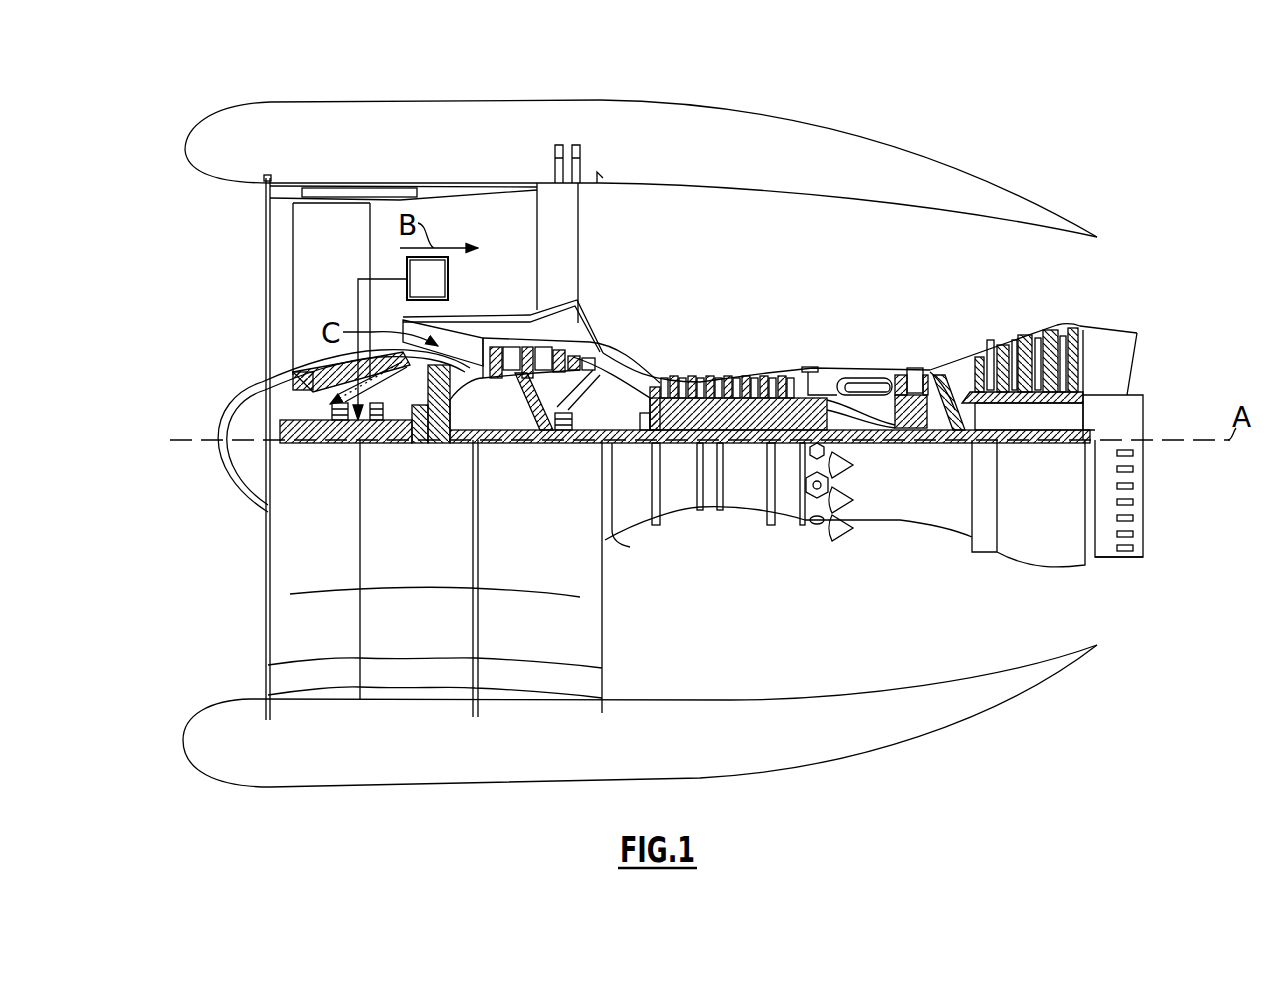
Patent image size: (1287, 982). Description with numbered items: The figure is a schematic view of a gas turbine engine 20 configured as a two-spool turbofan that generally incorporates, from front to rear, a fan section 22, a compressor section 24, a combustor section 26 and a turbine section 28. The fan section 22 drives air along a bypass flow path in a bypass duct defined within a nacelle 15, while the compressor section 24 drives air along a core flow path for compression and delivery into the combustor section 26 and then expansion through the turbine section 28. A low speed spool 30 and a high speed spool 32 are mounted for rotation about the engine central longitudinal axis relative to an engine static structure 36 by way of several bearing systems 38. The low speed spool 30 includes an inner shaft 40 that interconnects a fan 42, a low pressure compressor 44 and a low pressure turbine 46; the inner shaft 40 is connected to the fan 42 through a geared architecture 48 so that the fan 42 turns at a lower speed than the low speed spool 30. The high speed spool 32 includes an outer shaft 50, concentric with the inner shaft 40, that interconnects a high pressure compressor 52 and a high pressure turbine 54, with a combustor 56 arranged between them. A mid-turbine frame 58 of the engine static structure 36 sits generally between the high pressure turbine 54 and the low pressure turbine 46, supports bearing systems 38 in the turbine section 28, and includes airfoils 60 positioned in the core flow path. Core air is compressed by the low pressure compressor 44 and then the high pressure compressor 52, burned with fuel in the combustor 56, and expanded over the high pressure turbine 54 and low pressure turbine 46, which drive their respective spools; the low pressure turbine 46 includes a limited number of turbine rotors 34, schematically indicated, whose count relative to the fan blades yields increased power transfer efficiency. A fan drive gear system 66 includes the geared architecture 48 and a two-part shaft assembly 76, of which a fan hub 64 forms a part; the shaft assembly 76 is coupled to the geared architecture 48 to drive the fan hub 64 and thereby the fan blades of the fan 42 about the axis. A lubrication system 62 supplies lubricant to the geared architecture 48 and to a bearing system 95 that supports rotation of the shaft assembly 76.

The nacelle 15 is at (452, 762).
The gas turbine engine 20 is at (1023, 133).
The fan section 22 is at (460, 160).
The compressor section 24 is at (840, 291).
The combustor section 26 is at (935, 291).
The turbine section 28 is at (1097, 291).
The low speed spool 30 is at (748, 448).
The high speed spool 32 is at (790, 398).
The turbine rotors 34 is at (1048, 404).
The engine static structure 36 is at (787, 522).
The bearing systems 38 is at (565, 443).
The inner shaft 40 is at (617, 443).
The fan 42 is at (344, 302).
The low pressure compressor 44 is at (540, 352).
The low pressure turbine 46 is at (1030, 322).
The geared architecture 48 is at (445, 443).
The outer shaft 50 is at (862, 437).
The high pressure compressor 52 is at (725, 398).
The high pressure turbine 54 is at (915, 373).
The combustor 56 is at (858, 385).
The mid-turbine frame 58 is at (956, 356).
The airfoils 60 is at (987, 418).
The lubrication system 62 is at (442, 292).
The fan hub 64 is at (335, 378).
The fan drive gear system 66 is at (378, 468).
The shaft assembly 76 is at (308, 452).
The bearing system 95 is at (318, 404).